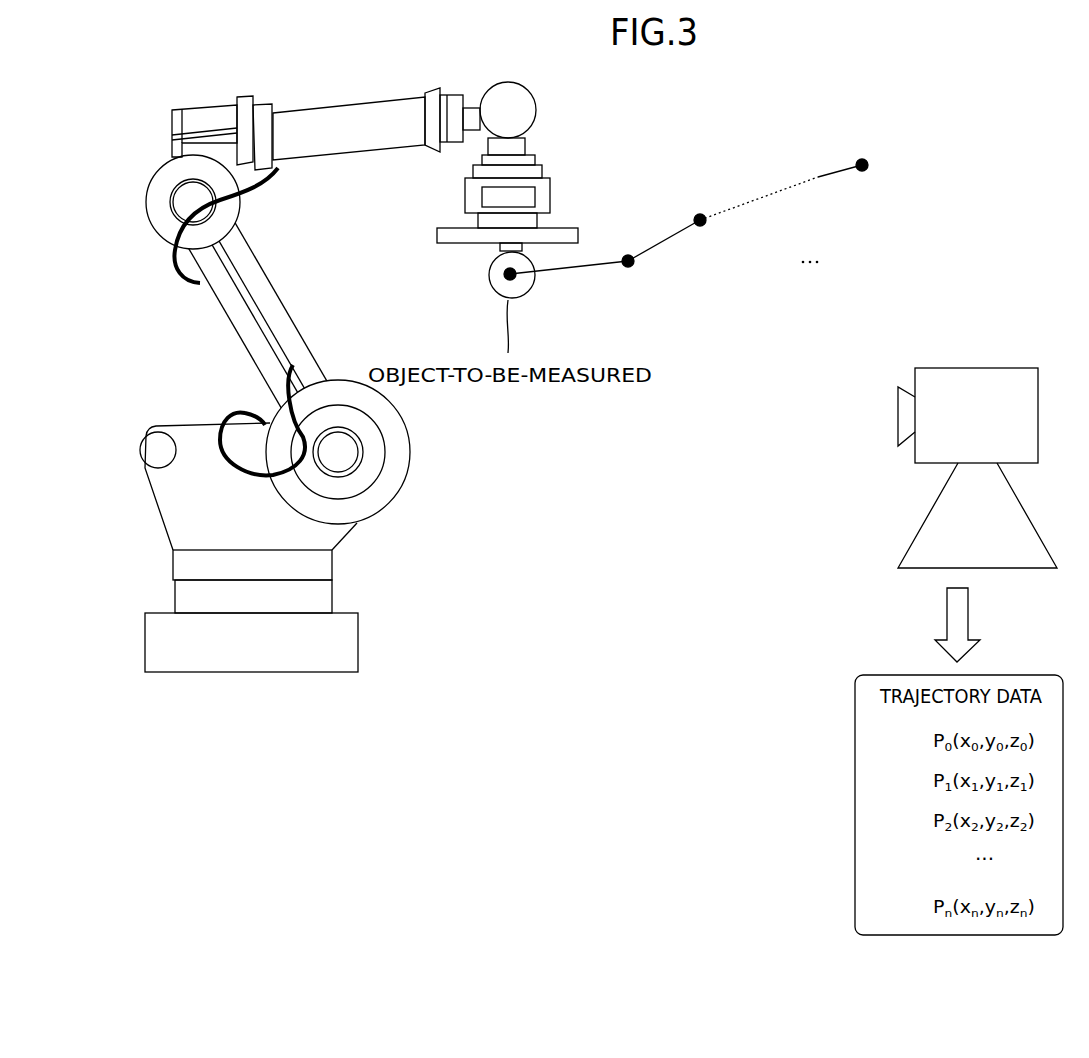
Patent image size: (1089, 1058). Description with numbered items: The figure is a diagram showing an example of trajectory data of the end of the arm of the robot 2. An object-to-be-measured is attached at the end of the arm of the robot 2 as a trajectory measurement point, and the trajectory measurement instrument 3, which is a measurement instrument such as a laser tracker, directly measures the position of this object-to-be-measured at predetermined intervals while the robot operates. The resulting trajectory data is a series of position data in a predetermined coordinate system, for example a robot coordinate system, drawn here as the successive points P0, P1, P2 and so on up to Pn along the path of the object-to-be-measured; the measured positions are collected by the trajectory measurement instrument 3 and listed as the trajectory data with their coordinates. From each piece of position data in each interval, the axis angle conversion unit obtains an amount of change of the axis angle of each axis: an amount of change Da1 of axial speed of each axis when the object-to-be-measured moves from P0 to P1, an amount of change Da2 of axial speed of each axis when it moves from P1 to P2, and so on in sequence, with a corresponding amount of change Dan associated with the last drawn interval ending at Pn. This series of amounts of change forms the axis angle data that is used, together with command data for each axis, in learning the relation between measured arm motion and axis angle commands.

The robot 2 is at (227, 672).
The trajectory measurement instrument 3 is at (1023, 568).
The position data P0 is at (515, 278).
The position data P1 is at (628, 261).
The position data P2 is at (700, 220).
The position data Pn is at (862, 165).
The amount of change Da1 is at (577, 270).
The amount of change Da2 is at (663, 237).
The amount of change Dan is at (818, 177).